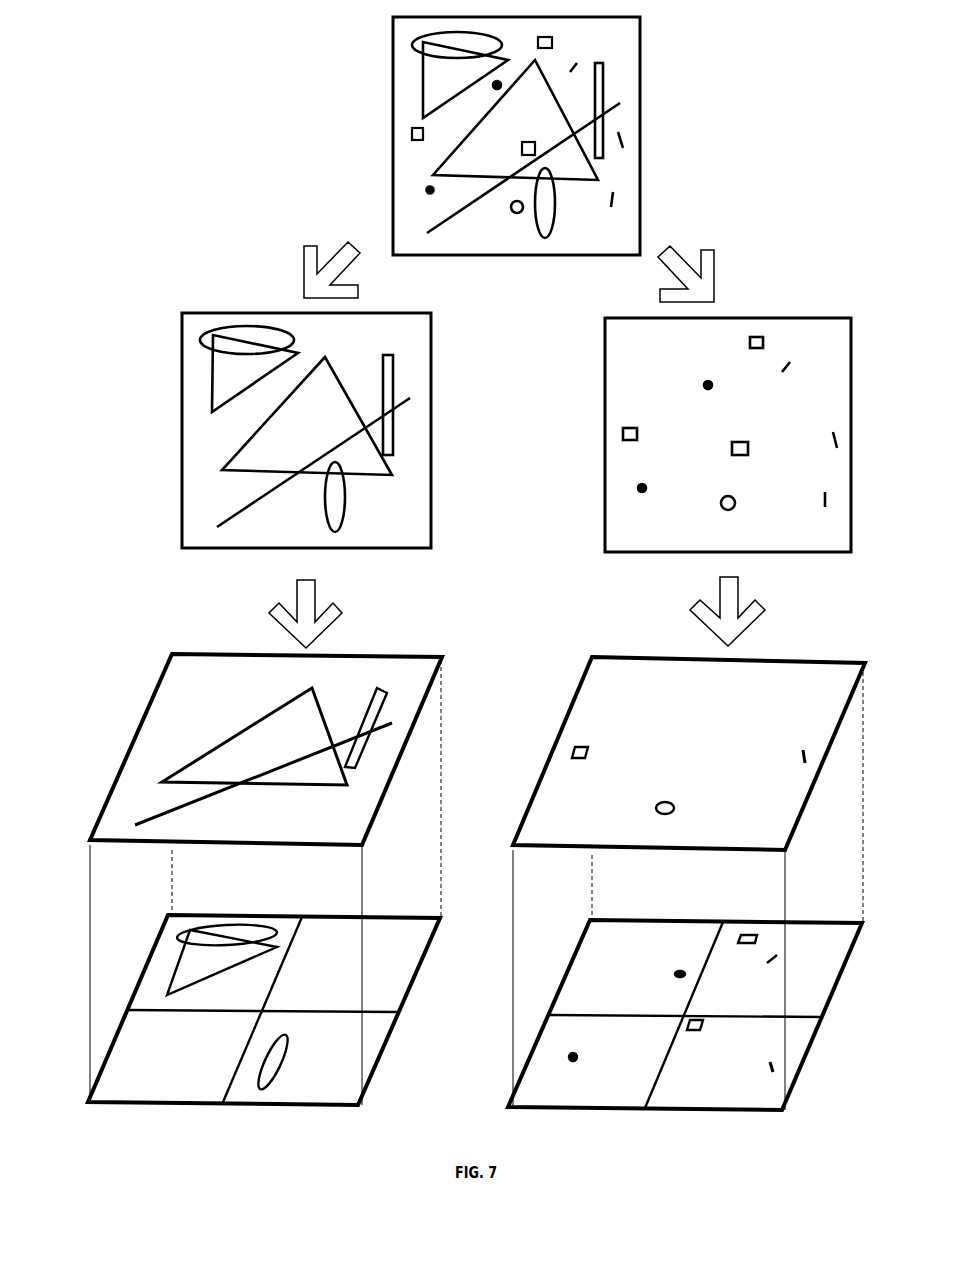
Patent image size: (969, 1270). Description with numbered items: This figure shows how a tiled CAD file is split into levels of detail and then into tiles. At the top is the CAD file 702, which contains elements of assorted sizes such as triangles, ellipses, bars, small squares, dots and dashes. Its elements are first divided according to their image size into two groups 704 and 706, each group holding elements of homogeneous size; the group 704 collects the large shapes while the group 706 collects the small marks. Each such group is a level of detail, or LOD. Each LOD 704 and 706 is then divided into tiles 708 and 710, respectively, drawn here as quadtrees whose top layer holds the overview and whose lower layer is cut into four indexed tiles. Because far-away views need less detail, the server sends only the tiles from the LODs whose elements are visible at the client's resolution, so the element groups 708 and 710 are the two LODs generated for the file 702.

The CAD file 702 is at (395, 43).
The group of large elements (LOD) 704 is at (185, 342).
The group of small elements (LOD) 706 is at (605, 350).
The tiles of first LOD 708 is at (157, 673).
The tiles of second LOD 710 is at (575, 682).